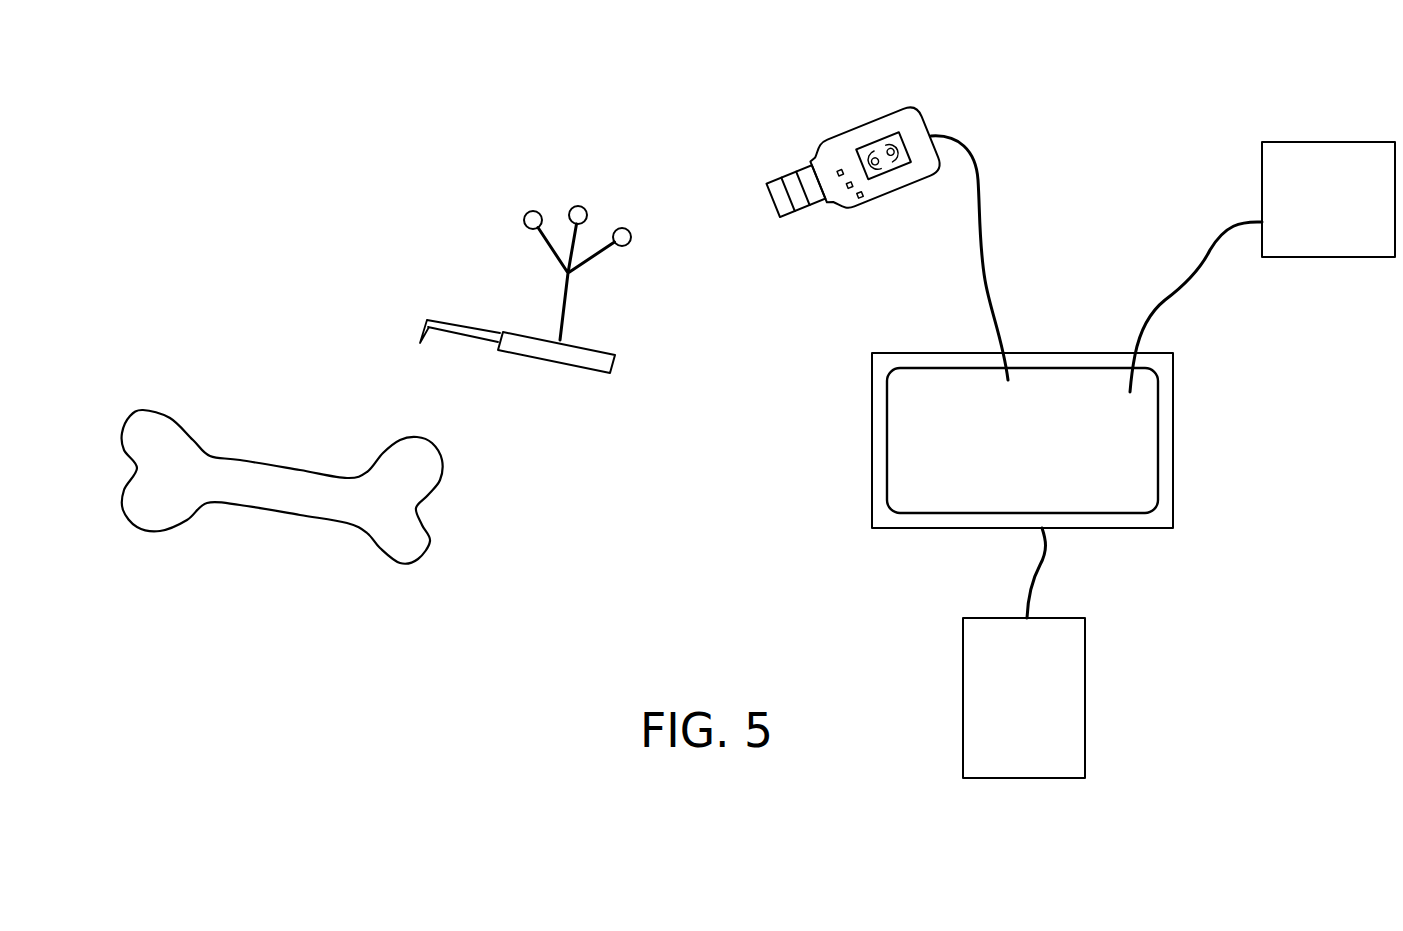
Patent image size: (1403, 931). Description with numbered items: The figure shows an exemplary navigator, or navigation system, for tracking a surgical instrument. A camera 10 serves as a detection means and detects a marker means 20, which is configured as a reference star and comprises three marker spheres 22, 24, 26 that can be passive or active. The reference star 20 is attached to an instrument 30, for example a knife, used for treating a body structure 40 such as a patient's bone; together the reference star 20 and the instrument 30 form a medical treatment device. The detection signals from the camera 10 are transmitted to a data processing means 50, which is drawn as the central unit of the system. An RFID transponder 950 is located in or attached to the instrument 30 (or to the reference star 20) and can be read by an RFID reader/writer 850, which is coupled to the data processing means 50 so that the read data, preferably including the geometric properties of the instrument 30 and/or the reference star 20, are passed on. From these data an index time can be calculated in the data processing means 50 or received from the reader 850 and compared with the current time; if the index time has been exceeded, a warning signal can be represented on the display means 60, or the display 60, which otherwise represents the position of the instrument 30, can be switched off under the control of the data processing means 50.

The camera 10 is at (913, 124).
The marker means 20 is at (565, 282).
The marker sphere 22 is at (631, 239).
The marker sphere 24 is at (583, 208).
The marker sphere 26 is at (524, 219).
The instrument 30 is at (587, 367).
The body structure 40 is at (163, 432).
The data processing means 50 is at (1139, 488).
The display means 60 is at (1335, 148).
The RFID reader/writer 850 is at (1024, 653).
The RFID transponder 950 is at (523, 338).